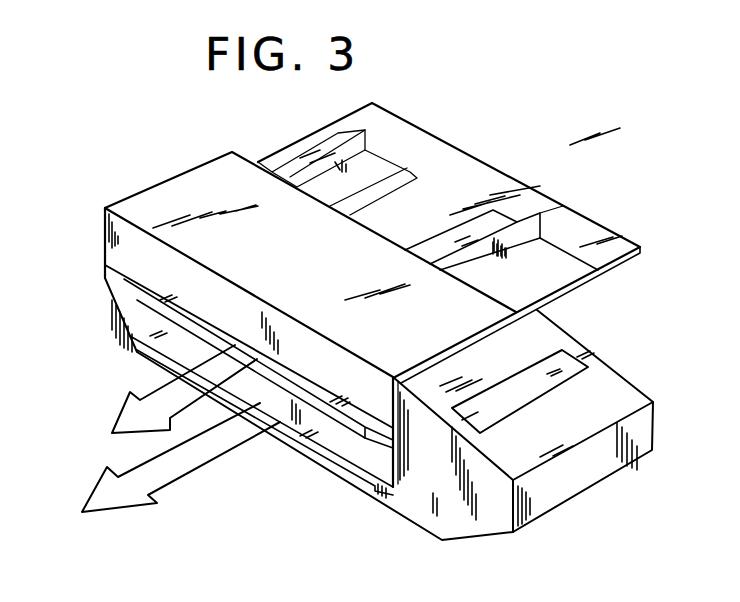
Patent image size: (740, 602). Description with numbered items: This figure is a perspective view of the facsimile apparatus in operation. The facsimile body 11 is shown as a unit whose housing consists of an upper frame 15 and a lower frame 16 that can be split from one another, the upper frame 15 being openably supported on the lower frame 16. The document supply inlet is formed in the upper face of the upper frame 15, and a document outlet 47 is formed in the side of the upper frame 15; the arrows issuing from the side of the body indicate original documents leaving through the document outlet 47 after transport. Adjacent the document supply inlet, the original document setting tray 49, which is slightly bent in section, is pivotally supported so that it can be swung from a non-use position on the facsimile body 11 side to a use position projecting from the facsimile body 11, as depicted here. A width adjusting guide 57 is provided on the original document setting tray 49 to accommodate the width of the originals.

The facsimile body 11 is at (150, 181).
The upper frame 15 is at (126, 251).
The lower frame 16 is at (442, 490).
The document outlet 47 is at (122, 300).
The original document setting tray 49 is at (474, 170).
The width adjusting guide 57 is at (542, 226).